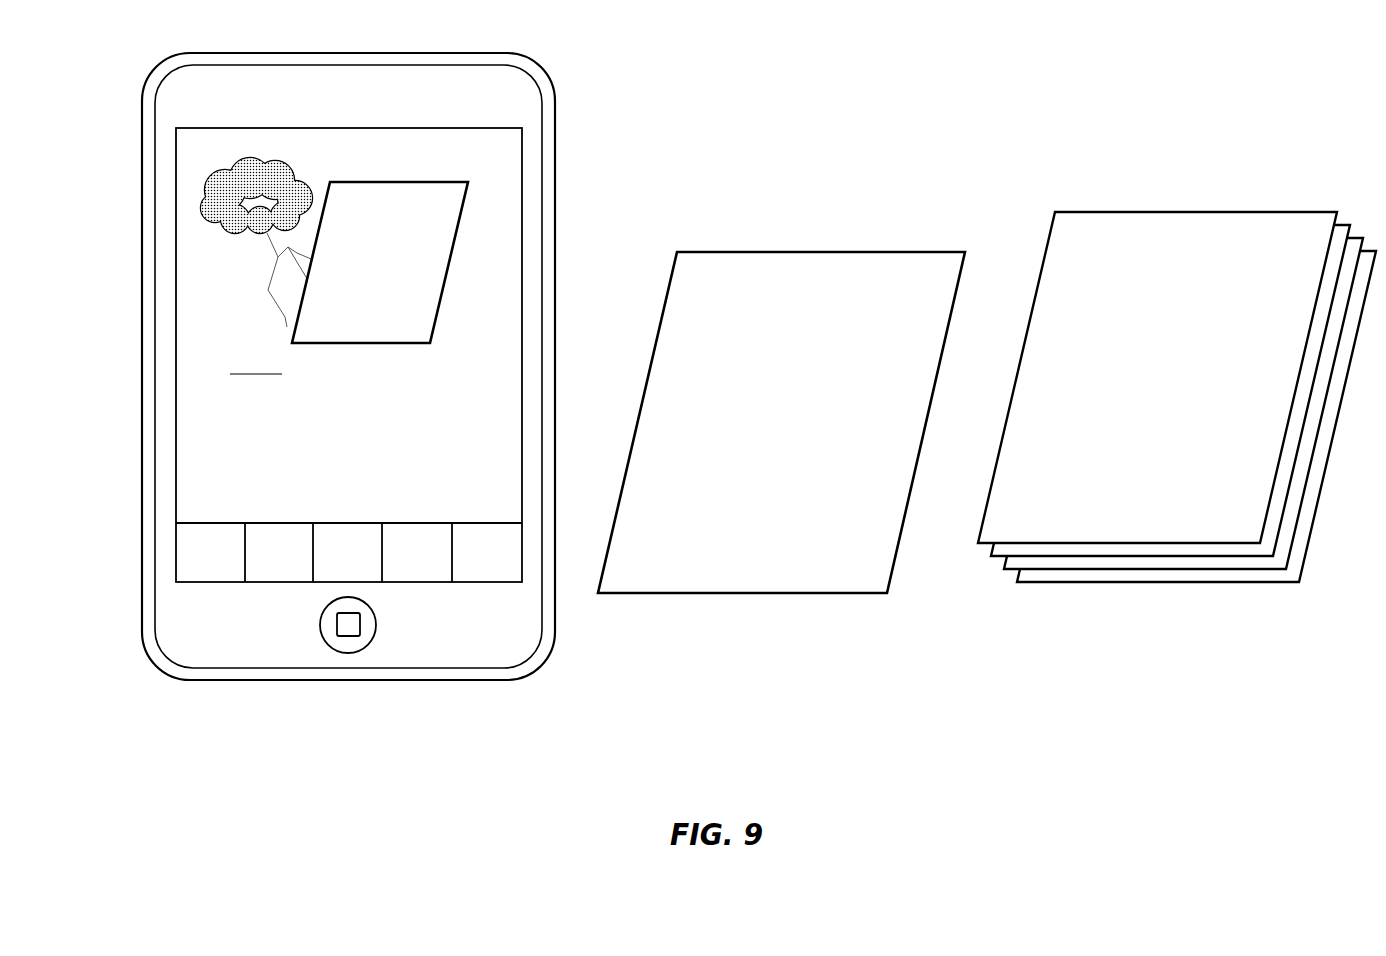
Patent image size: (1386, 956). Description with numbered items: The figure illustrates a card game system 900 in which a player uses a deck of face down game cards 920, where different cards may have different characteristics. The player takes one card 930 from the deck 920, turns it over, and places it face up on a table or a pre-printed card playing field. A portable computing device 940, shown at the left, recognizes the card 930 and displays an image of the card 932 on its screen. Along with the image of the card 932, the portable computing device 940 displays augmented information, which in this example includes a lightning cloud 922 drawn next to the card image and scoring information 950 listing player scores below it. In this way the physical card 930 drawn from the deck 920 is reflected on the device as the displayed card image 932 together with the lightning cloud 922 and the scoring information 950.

The card game system 900 is at (716, 117).
The deck of face down game cards 920 is at (1220, 583).
The lightning cloud 922 is at (232, 228).
The card 930 is at (895, 302).
The image of the card 932 is at (446, 214).
The portable computing device 940 is at (442, 680).
The scoring information 950 is at (262, 455).